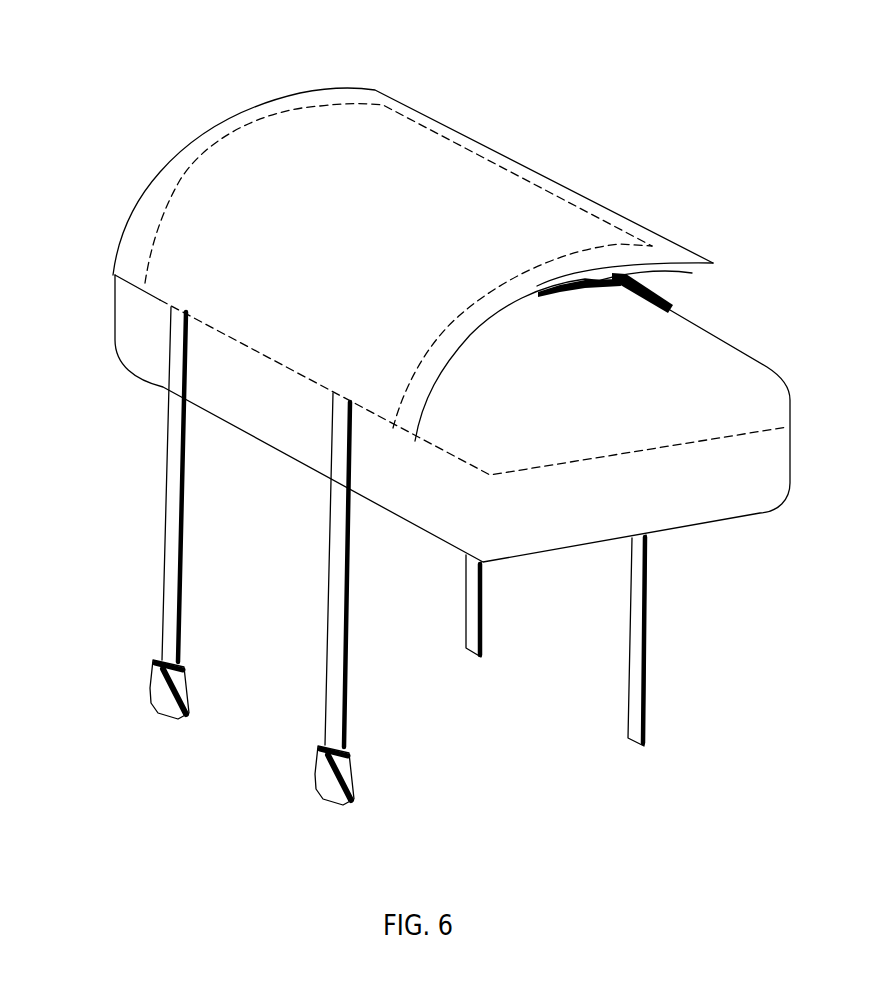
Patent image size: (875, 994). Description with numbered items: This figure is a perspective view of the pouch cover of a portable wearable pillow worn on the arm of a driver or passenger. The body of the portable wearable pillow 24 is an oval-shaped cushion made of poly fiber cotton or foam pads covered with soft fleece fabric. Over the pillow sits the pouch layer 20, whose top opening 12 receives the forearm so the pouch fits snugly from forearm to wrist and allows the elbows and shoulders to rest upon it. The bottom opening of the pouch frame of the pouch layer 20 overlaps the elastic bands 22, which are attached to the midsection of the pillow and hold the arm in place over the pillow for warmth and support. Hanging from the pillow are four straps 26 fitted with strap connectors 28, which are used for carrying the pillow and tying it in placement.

The top opening 12 is at (242, 60).
The pouch layer 20 is at (670, 254).
The elastic bands 22 is at (692, 273).
The portable wearable pillow 24 is at (772, 392).
The strap 26 is at (170, 597).
The strap connectors 28 is at (185, 688).